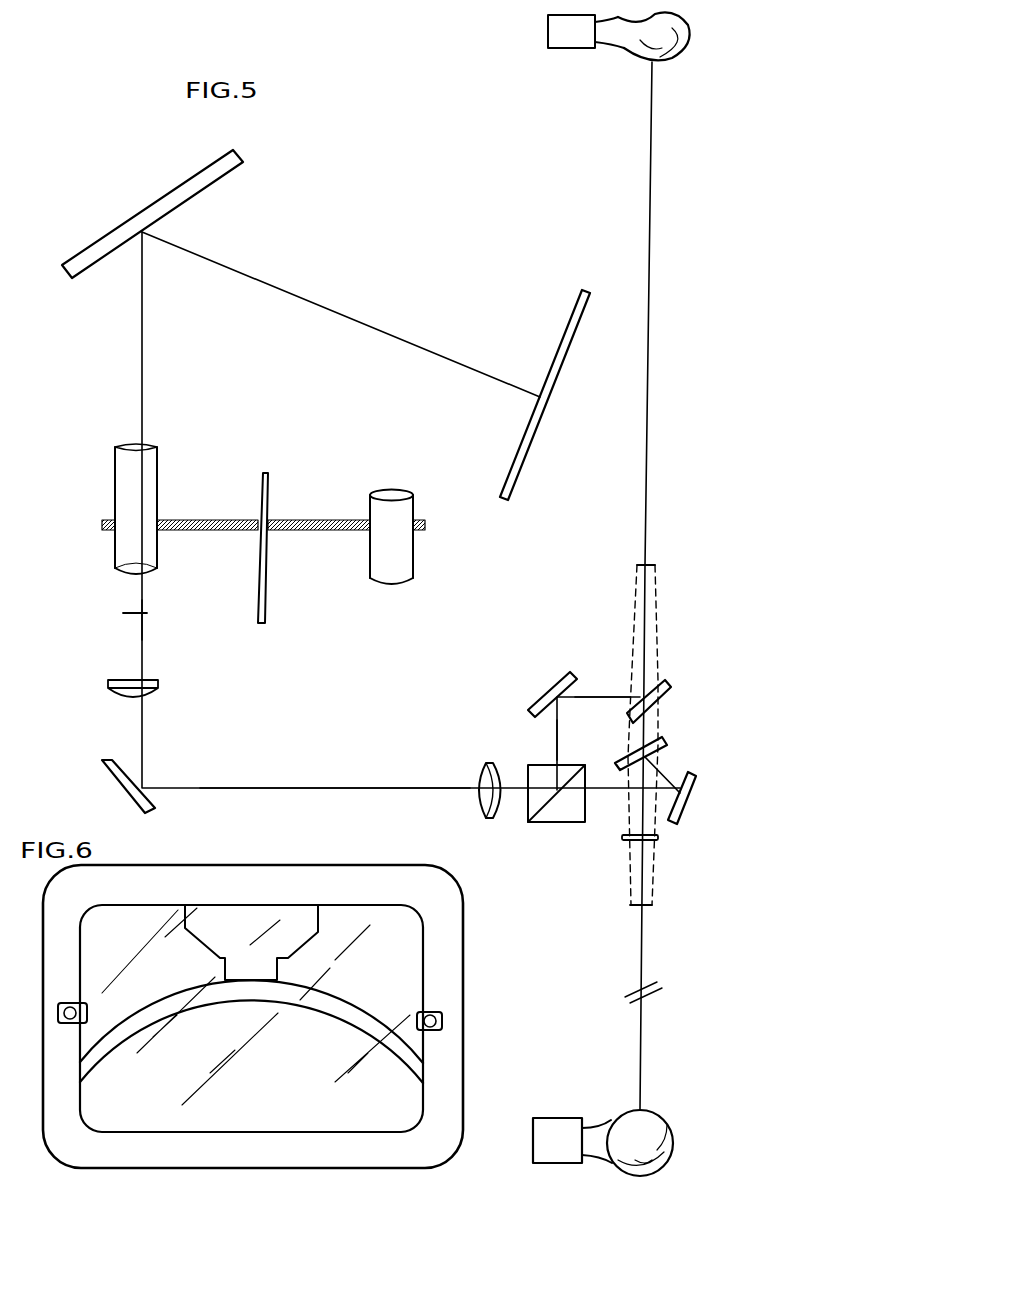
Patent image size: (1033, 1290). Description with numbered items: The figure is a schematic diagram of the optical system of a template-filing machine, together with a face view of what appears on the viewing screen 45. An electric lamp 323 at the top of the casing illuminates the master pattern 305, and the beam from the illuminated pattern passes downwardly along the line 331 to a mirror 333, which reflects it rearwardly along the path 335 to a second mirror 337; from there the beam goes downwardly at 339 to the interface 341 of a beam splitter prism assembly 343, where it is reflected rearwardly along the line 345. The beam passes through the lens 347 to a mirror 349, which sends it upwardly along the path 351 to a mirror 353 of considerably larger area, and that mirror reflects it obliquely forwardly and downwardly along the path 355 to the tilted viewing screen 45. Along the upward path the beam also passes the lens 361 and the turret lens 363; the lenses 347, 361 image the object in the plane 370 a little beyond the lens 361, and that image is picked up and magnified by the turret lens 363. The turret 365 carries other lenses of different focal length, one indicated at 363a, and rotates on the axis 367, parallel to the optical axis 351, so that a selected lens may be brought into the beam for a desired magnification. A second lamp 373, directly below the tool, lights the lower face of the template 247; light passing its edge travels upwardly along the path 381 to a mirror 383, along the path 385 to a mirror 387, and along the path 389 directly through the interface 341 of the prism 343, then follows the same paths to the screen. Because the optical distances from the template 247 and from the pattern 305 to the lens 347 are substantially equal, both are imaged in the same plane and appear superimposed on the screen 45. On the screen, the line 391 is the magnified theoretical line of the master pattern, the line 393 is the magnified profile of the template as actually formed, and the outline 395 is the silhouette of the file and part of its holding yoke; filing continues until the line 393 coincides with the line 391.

In FIG. 5, the electric lamp 323 is at (688, 42).
In FIG. 5, the mirror 353 is at (190, 203).
In FIG. 5, the light path 355 is at (390, 333).
In FIG. 5, the viewing screen 45 is at (535, 437).
In FIG. 6, the viewing screen 45 is at (408, 970).
In FIG. 5, the turret 365 is at (227, 521).
In FIG. 5, the turret lens 363 is at (118, 551).
In FIG. 5, the turret axis 367 is at (268, 578).
In FIG. 5, the turret lens 363a is at (405, 556).
In FIG. 5, the image plane 370 is at (128, 618).
In FIG. 5, the light path 351 is at (141, 653).
In FIG. 5, the lens 361 is at (158, 695).
In FIG. 5, the mirror 349 is at (150, 803).
In FIG. 5, the light path 345 is at (396, 790).
In FIG. 5, the lens 347 is at (480, 785).
In FIG. 5, the interface 341 is at (545, 812).
In FIG. 5, the beam splitter prism assembly 343 is at (573, 812).
In FIG. 5, the second mirror 337 is at (561, 672).
In FIG. 5, the light path 339 is at (556, 737).
In FIG. 5, the light path 335 is at (600, 700).
In FIG. 5, the mirror 333 is at (672, 697).
In FIG. 5, the master pattern 305 is at (647, 566).
In FIG. 5, the light path 331 is at (647, 632).
In FIG. 5, the mirror 383 is at (660, 742).
In FIG. 5, the light path 385 is at (660, 775).
In FIG. 5, the mirror 387 is at (697, 793).
In FIG. 5, the light path 389 is at (627, 793).
In FIG. 5, the light path 381 is at (642, 813).
In FIG. 5, the template 247 is at (652, 907).
In FIG. 5, the second electric lamp 373 is at (660, 1133).
In FIG. 6, the outline of file 395 is at (225, 968).
In FIG. 6, the template profile line 393 is at (330, 999).
In FIG. 6, the master pattern line 391 is at (322, 1014).